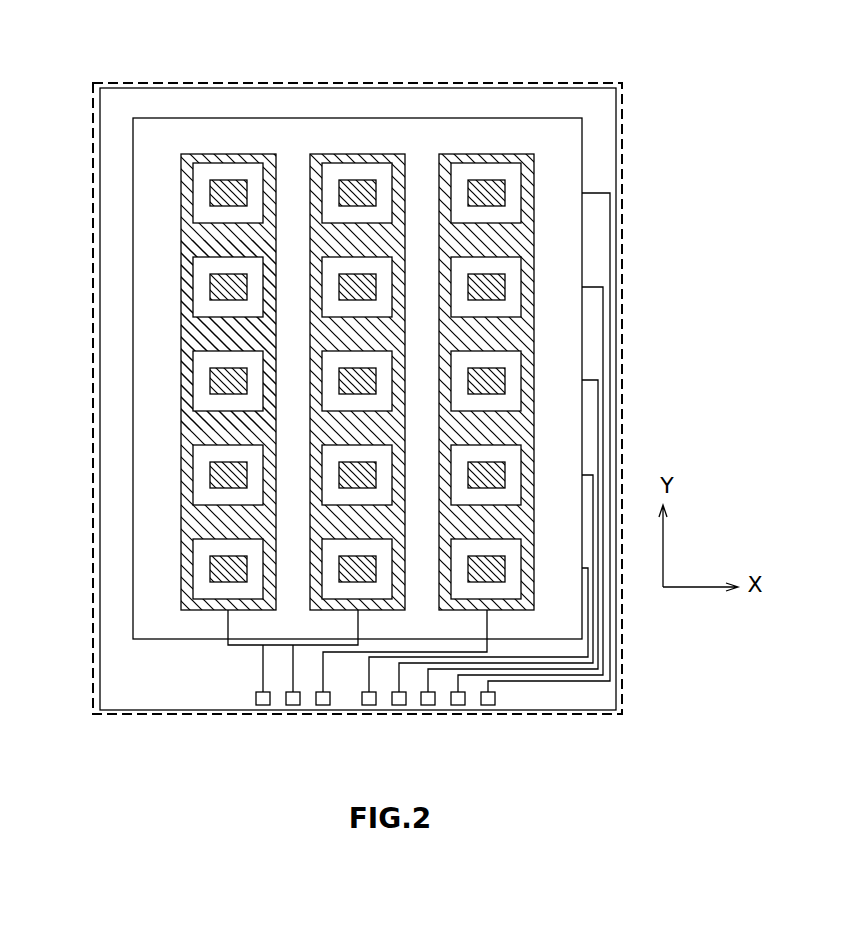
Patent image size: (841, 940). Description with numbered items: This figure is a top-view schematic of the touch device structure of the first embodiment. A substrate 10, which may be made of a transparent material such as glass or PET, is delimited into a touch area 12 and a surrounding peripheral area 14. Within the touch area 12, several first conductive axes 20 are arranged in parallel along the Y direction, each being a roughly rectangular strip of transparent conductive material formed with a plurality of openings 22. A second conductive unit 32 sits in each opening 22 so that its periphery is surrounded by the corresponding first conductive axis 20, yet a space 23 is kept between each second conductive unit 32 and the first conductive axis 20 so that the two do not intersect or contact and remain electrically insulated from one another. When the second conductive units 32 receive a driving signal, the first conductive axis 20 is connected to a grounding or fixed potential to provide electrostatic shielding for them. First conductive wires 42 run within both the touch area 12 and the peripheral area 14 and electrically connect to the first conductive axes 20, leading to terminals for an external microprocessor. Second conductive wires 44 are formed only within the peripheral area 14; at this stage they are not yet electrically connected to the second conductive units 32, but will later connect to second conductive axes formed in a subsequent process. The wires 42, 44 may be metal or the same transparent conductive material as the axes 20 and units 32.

The substrate 10 is at (598, 323).
The touch area 12 is at (368, 118).
The peripheral area 14 is at (428, 83).
The first conductive axis 20 is at (229, 153).
The opening 22 is at (200, 307).
The space 23 is at (190, 262).
The second conductive unit 32 is at (210, 192).
The first conductive wire 42 is at (262, 677).
The second conductive wire 44 is at (610, 247).